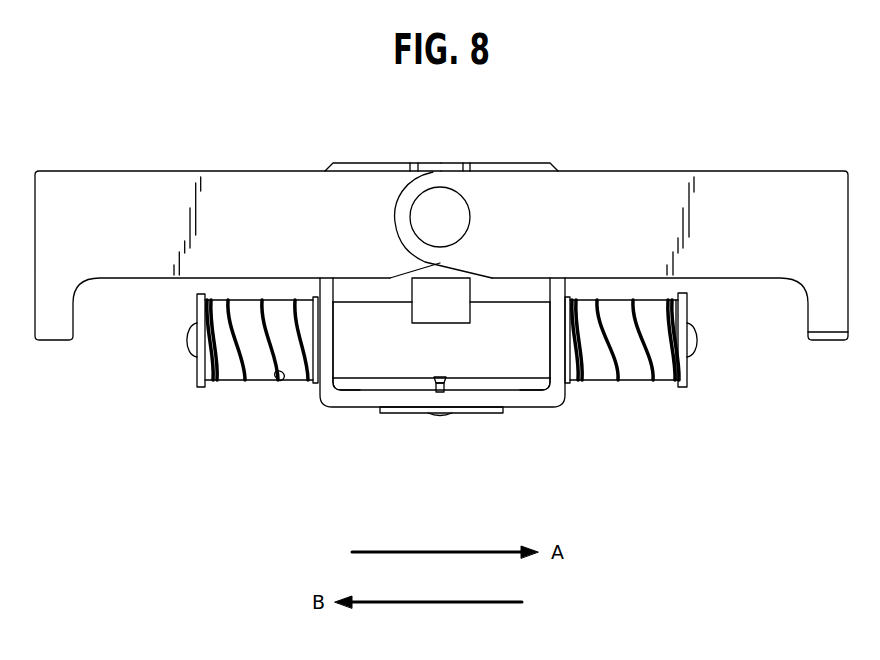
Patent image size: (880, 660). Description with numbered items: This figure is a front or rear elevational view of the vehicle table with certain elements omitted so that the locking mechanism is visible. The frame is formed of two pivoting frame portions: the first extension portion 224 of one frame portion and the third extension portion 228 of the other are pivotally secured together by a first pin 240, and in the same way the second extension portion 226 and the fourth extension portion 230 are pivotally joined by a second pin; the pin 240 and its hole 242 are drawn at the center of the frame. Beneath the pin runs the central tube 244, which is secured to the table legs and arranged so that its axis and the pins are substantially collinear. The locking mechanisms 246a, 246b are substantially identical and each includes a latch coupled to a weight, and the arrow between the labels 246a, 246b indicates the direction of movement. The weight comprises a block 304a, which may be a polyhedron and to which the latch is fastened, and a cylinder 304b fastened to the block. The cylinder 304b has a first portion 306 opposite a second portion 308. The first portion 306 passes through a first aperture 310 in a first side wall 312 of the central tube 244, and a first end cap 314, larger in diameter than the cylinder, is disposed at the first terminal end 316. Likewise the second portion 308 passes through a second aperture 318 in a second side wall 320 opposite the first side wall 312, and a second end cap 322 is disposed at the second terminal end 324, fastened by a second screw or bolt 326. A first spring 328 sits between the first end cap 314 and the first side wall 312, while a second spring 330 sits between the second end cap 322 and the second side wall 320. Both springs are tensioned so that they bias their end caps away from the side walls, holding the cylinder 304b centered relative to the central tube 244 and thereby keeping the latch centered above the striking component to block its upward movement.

The first extension portion 224 is at (238, 251).
The fourth extension portion 230 is at (130, 265).
The second extension portion 226 is at (644, 232).
The third extension portion 228 is at (727, 190).
The first pin 240 is at (440, 196).
The shaft hole 242 is at (433, 200).
The central tube 244 is at (330, 393).
The locking mechanism 246a is at (229, 432).
The locking mechanism 246b is at (263, 388).
The block 304a is at (452, 313).
The cylinder 304b is at (603, 370).
The first portion 306 is at (232, 380).
The second portion 308 is at (633, 373).
The first aperture 310 is at (347, 400).
The first side wall 312 is at (330, 328).
The first end cap 314 is at (200, 370).
The first terminal end 316 is at (203, 387).
The second aperture 318 is at (538, 387).
The second side wall 320 is at (547, 352).
The second end cap 322 is at (693, 380).
The second terminal end 324 is at (675, 380).
The second screw or bolt 326 is at (693, 340).
The first spring 328 is at (283, 372).
The second spring 330 is at (618, 383).